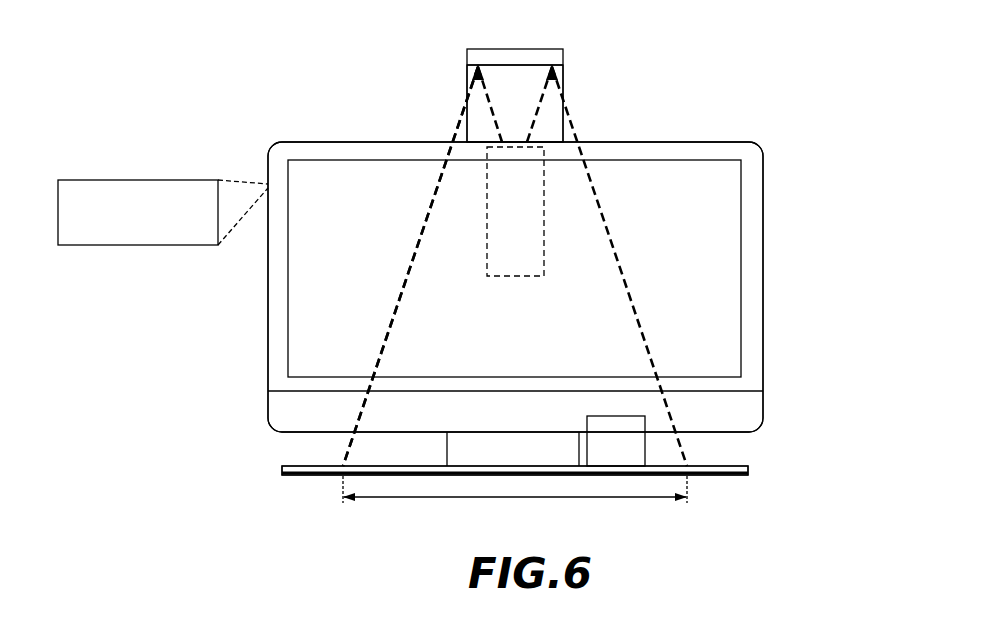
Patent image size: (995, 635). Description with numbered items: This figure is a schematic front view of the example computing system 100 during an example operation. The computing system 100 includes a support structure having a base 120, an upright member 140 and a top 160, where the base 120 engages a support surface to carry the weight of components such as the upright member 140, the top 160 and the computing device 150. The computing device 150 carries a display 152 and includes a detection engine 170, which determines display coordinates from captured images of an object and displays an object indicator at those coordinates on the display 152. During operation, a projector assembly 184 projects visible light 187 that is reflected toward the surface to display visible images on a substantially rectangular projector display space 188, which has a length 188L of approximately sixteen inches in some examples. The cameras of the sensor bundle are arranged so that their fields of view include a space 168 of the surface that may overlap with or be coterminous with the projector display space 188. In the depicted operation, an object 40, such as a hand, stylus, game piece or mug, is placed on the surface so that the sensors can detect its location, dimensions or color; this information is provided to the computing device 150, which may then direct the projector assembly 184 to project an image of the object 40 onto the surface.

The computing system 100 is at (687, 90).
The computing device 150 is at (764, 200).
The display 152 is at (354, 201).
The top 160 is at (558, 42).
The upright member 140 is at (565, 101).
The visible light 187 is at (462, 121).
The space 168 is at (410, 266).
The projector assembly 184 is at (486, 217).
The detection engine 170 is at (137, 247).
The projector display space 188 is at (387, 466).
The length 188L is at (515, 504).
The base 120 is at (278, 463).
The object 40 is at (630, 411).